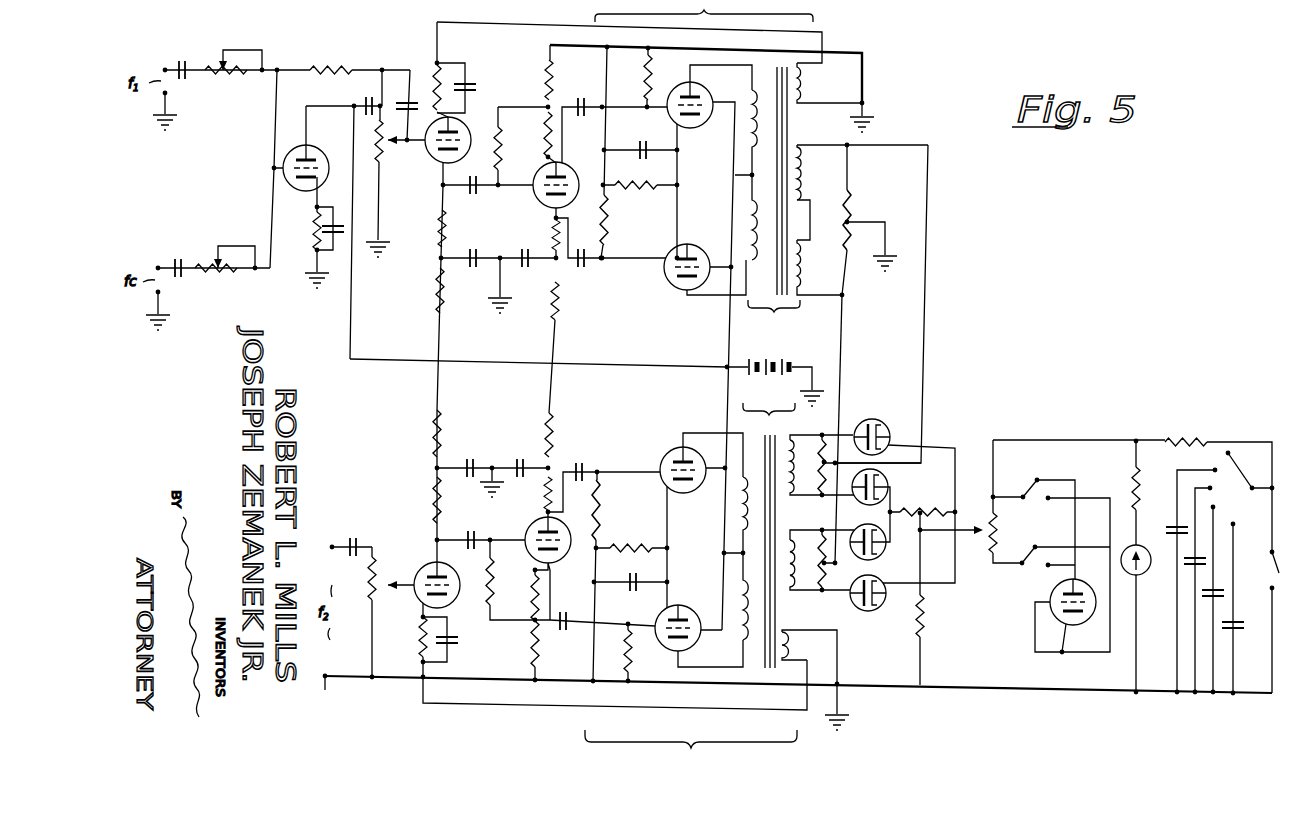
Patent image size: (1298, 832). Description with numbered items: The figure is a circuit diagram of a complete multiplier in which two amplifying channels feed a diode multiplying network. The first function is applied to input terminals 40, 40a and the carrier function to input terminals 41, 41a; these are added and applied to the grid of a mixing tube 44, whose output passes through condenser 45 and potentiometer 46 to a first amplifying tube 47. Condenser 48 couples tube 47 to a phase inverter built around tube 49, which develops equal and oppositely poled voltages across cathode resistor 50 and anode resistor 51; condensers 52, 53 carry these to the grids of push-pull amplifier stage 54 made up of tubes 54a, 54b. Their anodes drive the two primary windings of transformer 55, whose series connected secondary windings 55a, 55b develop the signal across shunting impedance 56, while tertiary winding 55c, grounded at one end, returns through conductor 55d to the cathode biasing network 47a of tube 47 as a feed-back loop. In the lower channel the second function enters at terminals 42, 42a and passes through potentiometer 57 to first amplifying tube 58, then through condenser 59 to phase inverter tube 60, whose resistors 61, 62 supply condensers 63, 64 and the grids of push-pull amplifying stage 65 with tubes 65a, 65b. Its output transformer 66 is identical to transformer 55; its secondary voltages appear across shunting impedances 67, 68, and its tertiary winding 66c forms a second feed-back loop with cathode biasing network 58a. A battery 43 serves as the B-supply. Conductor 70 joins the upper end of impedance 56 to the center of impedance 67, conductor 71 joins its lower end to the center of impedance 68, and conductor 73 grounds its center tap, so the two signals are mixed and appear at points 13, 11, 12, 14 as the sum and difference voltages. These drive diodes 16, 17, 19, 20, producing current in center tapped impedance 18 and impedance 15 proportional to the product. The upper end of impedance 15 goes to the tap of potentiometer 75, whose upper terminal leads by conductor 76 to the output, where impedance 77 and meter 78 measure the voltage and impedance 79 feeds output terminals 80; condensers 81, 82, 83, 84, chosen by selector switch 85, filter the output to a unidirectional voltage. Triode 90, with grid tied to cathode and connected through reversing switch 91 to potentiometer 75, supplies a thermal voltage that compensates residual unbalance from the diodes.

The terminal point 11 is at (868, 477).
The terminal point 12 is at (816, 528).
The terminal point 13 is at (826, 434).
The terminal point 14 is at (824, 588).
The impedance 15 is at (930, 600).
The diode 16 is at (886, 482).
The diode 17 is at (884, 554).
The center tapped impedance 18 is at (923, 506).
The diode 19 is at (888, 426).
The diode 20 is at (875, 612).
The input terminal 40 is at (163, 69).
The input terminal 40a is at (168, 96).
The input terminal 41 is at (157, 267).
The input terminal 41a is at (161, 295).
The input terminal 42 is at (338, 550).
The input terminal 42a is at (797, 691).
The battery 43 is at (791, 352).
The mixing tube 44 is at (298, 200).
The condenser 45 is at (361, 101).
The potentiometer 46 is at (386, 160).
The first amplifying tube 47 is at (437, 170).
The cathode biasing network 47a is at (465, 84).
The condenser 48 is at (474, 192).
The phase inverter tube 49 is at (542, 202).
The cathode resistor 50 is at (546, 103).
The anode resistor 51 is at (553, 232).
The condenser 52 is at (585, 98).
The condenser 53 is at (584, 262).
The push-pull amplifier stage 54 is at (704, 11).
The push-pull tube 54a is at (699, 127).
The push-pull tube 54b is at (689, 245).
The transformer 55 is at (767, 199).
The secondary winding 55a is at (802, 283).
The secondary winding 55b is at (806, 190).
The tertiary winding 55c is at (804, 84).
The conductor 55d is at (542, 20).
The shunting impedance 56 is at (851, 210).
The potentiometer 57 is at (380, 578).
The first amplifying tube 58 is at (410, 601).
The cathode biasing network 58a is at (452, 649).
The condenser 59 is at (474, 532).
The phase inverter tube 60 is at (532, 556).
The resistor 61 is at (543, 511).
The resistor 62 is at (529, 611).
The condenser 63 is at (576, 464).
The condenser 64 is at (561, 632).
The push-pull amplifying stage 65 is at (691, 752).
The push-pull tube 65a is at (686, 494).
The push-pull tube 65b is at (686, 606).
The transformer 66 is at (759, 528).
The tertiary winding 66c is at (792, 658).
The shunting impedance 67 is at (814, 434).
The shunting impedance 68 is at (814, 586).
The conductor 70 is at (928, 251).
The conductor 71 is at (844, 374).
The conductor 73 is at (886, 230).
The potentiometer 75 is at (1002, 528).
The conductor 76 is at (1086, 439).
The impedance 77 is at (1129, 482).
The meter 78 is at (1137, 546).
The impedance 79 is at (1192, 440).
The output terminals 80 is at (1273, 576).
The condenser 81 is at (1233, 633).
The condenser 82 is at (1224, 597).
The condenser 83 is at (1188, 568).
The condenser 84 is at (1174, 516).
The selector switch 85 is at (1244, 452).
The triode 90 is at (1070, 625).
The reversing switch 91 is at (1057, 469).